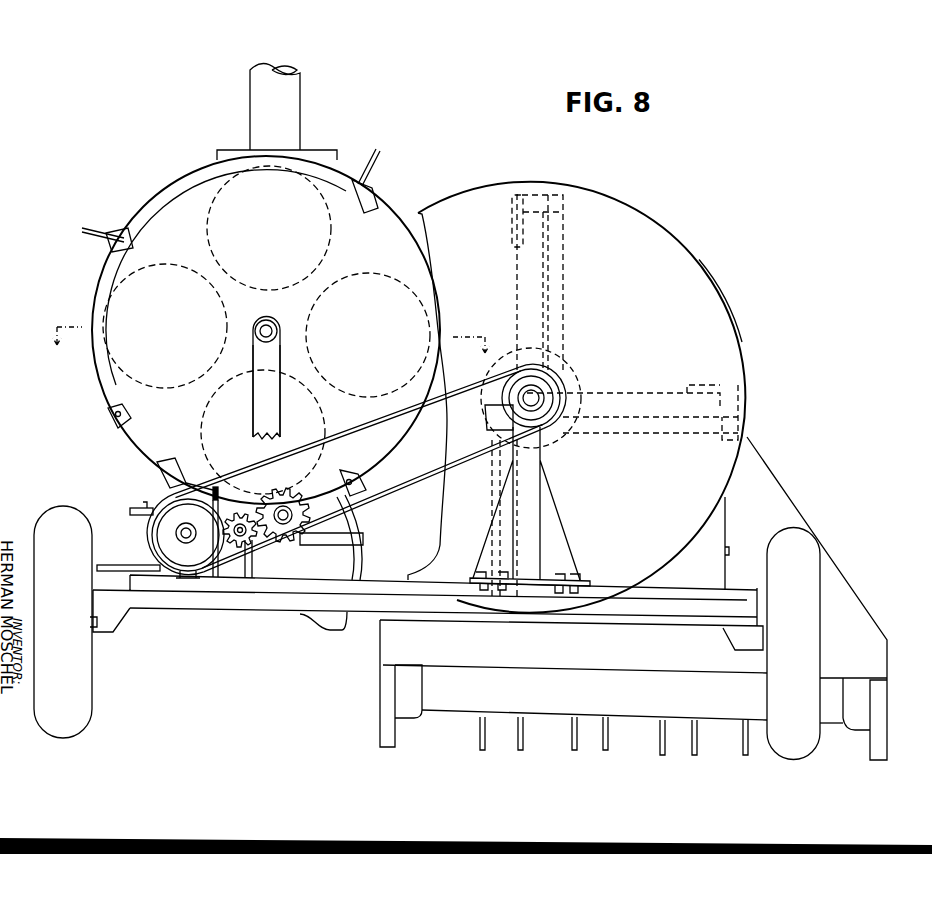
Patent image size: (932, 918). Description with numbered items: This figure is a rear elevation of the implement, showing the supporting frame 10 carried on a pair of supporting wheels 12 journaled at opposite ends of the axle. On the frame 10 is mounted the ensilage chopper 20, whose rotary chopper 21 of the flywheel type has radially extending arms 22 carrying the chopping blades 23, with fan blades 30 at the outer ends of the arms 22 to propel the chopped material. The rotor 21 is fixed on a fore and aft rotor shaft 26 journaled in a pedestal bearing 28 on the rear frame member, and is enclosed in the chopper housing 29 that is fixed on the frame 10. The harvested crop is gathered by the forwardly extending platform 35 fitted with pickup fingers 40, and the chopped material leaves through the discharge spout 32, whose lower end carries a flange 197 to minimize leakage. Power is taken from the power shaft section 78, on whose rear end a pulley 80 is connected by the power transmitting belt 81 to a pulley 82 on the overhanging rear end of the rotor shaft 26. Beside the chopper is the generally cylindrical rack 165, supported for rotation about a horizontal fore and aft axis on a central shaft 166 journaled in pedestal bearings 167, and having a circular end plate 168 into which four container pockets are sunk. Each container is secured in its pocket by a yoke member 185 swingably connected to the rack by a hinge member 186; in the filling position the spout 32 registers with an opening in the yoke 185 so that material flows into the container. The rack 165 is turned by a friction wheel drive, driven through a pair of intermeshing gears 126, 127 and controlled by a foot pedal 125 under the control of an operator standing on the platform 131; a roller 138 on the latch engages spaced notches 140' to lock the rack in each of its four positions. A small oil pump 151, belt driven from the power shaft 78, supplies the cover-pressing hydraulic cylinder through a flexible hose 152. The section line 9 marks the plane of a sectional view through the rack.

The section line 9- 9 is at (274, 348).
The supporting frame 10 is at (229, 621).
The supporting wheels 12 is at (84, 704).
The ensilage chopper 20 is at (710, 261).
The rotary chopper 21 is at (589, 380).
The radially extending arms 22 is at (646, 393).
The chopping blades 23 is at (570, 197).
The rotor shaft 26 is at (537, 395).
The pedestal bearing 28 is at (543, 528).
The chopper housing 29 is at (727, 307).
The fan blades 30 is at (518, 193).
The discharge spout 32 is at (303, 121).
The platform 35 is at (852, 607).
The pickup fingers 40 is at (660, 745).
The power shaft section 78 is at (197, 537).
The pulley 80 is at (181, 573).
The power transmitting belt 81 is at (397, 488).
The pulley 82 is at (498, 426).
The foot pedal 125 is at (147, 507).
The gear 126 is at (248, 506).
The gear 127 is at (357, 480).
The platform 131 is at (110, 564).
The roller 138 is at (197, 480).
The notches 140' is at (209, 221).
The oil pump 151 is at (248, 575).
The flexible hose 152 is at (262, 540).
The cylindrical rack 165 is at (394, 204).
The shaft 166 is at (262, 328).
The pedestal bearings 167 is at (280, 363).
The end plate 168 is at (168, 217).
The yoke member 185 is at (207, 173).
The hinge member 186 is at (118, 424).
The flange 197 is at (231, 150).